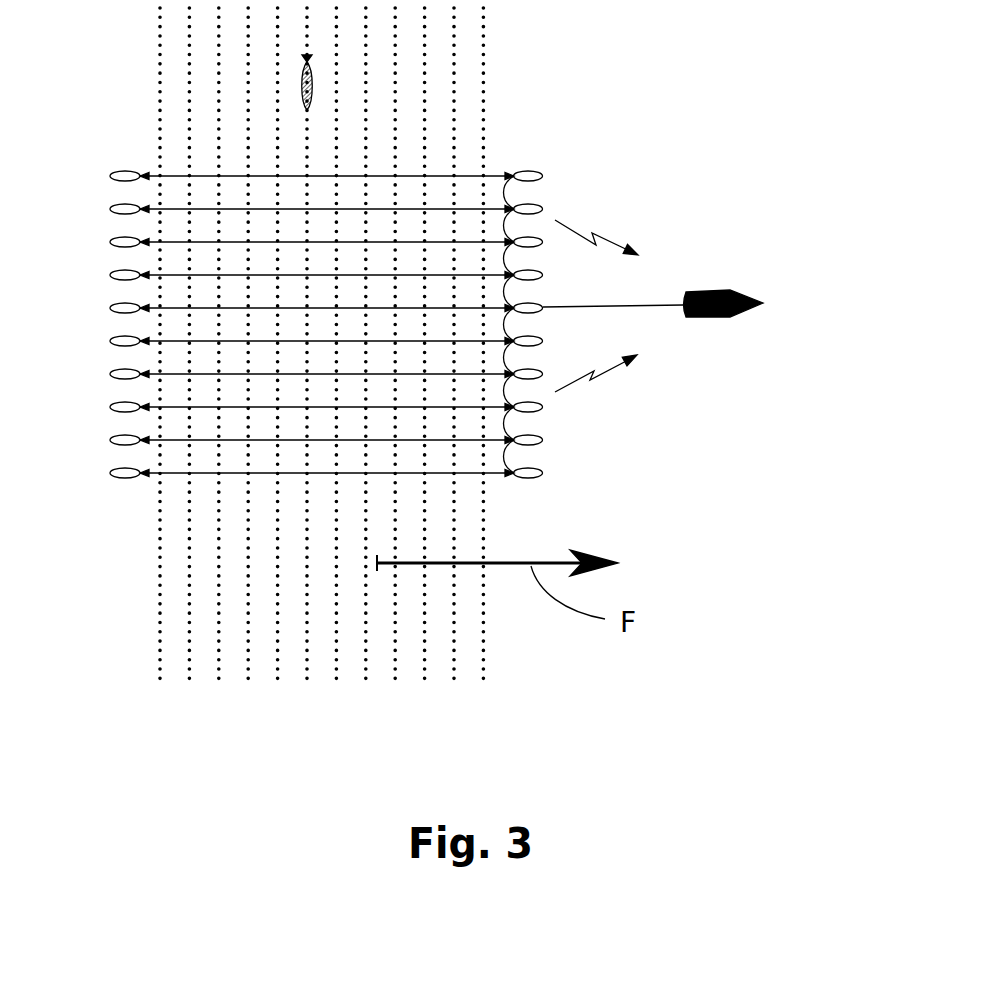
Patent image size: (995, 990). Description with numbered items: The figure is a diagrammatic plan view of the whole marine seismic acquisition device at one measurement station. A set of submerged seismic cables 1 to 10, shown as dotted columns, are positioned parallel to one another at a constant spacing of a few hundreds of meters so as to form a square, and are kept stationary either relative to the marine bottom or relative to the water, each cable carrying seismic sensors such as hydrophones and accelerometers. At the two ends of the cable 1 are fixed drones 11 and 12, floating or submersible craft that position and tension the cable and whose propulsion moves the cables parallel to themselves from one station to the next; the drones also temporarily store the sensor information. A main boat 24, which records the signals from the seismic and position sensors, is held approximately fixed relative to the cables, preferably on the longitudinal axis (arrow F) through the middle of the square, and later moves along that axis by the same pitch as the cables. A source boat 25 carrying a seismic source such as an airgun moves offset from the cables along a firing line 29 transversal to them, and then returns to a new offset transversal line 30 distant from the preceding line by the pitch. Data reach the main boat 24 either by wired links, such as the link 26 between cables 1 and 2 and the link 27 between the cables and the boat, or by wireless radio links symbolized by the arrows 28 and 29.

The seismic cable 1 is at (178, 176).
The seismic cable 2 is at (166, 204).
The seismic cable 10 is at (155, 478).
The drone 11 is at (120, 172).
The drone 12 is at (537, 170).
The main boat 24 is at (734, 325).
The source boat 25 is at (298, 80).
The link 26 is at (506, 191).
The link 27 is at (665, 302).
The wireless link arrow 28 is at (612, 236).
The line 29 is at (308, 47).
The offset transversal line 30 is at (338, 146).